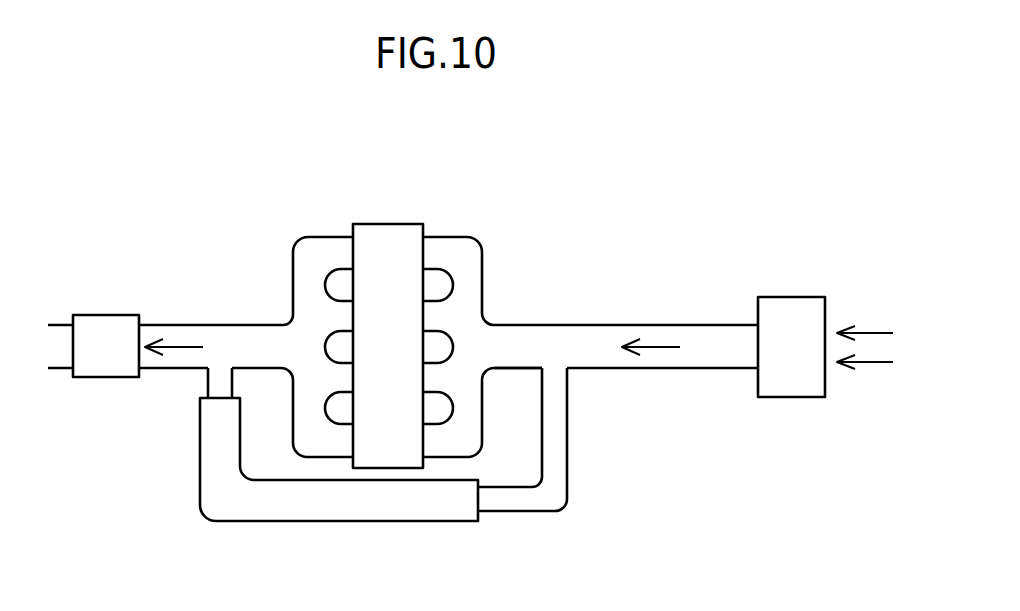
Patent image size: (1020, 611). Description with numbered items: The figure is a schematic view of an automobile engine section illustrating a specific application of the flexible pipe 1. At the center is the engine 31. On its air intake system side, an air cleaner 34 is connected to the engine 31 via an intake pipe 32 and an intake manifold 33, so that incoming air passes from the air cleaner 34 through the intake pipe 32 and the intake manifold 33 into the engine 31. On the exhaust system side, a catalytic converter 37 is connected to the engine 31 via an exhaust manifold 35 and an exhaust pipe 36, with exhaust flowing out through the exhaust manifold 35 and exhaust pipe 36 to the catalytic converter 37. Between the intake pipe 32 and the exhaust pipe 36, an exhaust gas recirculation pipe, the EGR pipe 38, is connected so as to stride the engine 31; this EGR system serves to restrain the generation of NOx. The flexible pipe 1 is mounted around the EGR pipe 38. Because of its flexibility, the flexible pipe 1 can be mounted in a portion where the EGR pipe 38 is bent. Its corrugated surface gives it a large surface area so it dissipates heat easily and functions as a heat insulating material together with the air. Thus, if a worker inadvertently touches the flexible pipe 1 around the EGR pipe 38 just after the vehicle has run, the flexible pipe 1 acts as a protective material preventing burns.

The flexible pipe 1 is at (338, 508).
The engine 31 is at (398, 240).
The intake pipe 32 is at (613, 325).
The intake manifold 33 is at (468, 267).
The air cleaner 34 is at (787, 297).
The exhaust manifold 35 is at (317, 267).
The exhaust pipe 36 is at (213, 323).
The catalytic converter 37 is at (118, 378).
The EGR pipe 38 is at (523, 512).